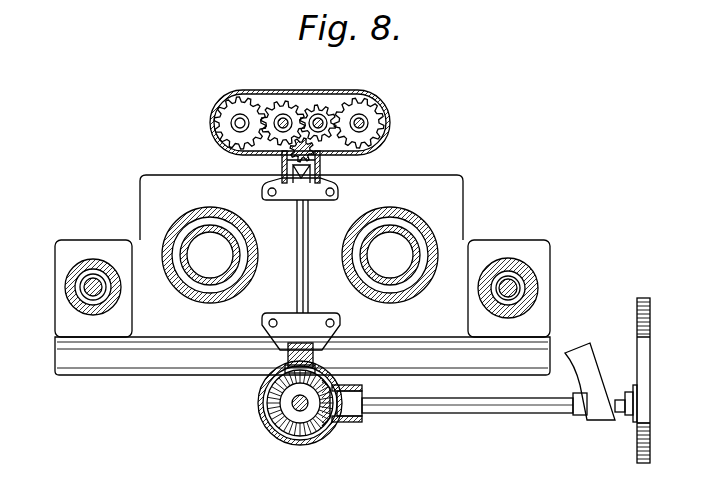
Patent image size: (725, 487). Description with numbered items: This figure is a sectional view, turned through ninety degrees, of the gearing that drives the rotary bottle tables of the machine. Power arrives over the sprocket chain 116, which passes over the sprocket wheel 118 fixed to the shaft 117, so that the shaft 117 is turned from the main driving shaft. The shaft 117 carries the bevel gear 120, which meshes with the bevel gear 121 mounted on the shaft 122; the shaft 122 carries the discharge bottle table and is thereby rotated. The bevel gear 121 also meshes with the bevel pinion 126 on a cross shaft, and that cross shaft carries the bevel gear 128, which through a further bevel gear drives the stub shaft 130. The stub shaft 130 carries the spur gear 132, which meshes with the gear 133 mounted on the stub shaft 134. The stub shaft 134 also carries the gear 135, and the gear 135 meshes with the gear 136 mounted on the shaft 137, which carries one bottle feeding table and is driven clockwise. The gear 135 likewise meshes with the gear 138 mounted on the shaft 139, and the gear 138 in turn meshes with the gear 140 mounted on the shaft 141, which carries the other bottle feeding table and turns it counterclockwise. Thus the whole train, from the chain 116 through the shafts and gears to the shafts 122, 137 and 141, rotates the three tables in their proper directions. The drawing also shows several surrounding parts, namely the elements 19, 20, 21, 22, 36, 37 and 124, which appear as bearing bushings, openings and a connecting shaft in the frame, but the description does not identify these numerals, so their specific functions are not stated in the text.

The shaft 19 is at (90, 285).
The bearing 20 is at (508, 285).
The bearing 21 is at (90, 260).
The bushing 22 is at (75, 275).
The shaft opening 36 is at (212, 228).
The bearing bushing 37 is at (182, 213).
The sprocket chain 116 is at (647, 307).
The shaft 117 is at (440, 406).
The sprocket wheel 118 is at (628, 417).
The bevel gear 120 is at (332, 380).
The bevel gear 121 is at (297, 429).
The shaft 122 is at (292, 403).
The vertical shaft 124 is at (303, 253).
The bevel pinion 126 is at (285, 372).
The bevel gear 128 is at (322, 167).
The stub shaft 130 is at (287, 153).
The spur gear 132 is at (290, 183).
The gear 133 is at (310, 107).
The stub shaft 134 is at (325, 118).
The gear 135 is at (320, 120).
The gear 136 is at (372, 115).
The shaft 137 is at (368, 125).
The gear 138 is at (279, 118).
The shaft 139 is at (282, 110).
The gear 140 is at (238, 105).
The shaft 141 is at (238, 123).